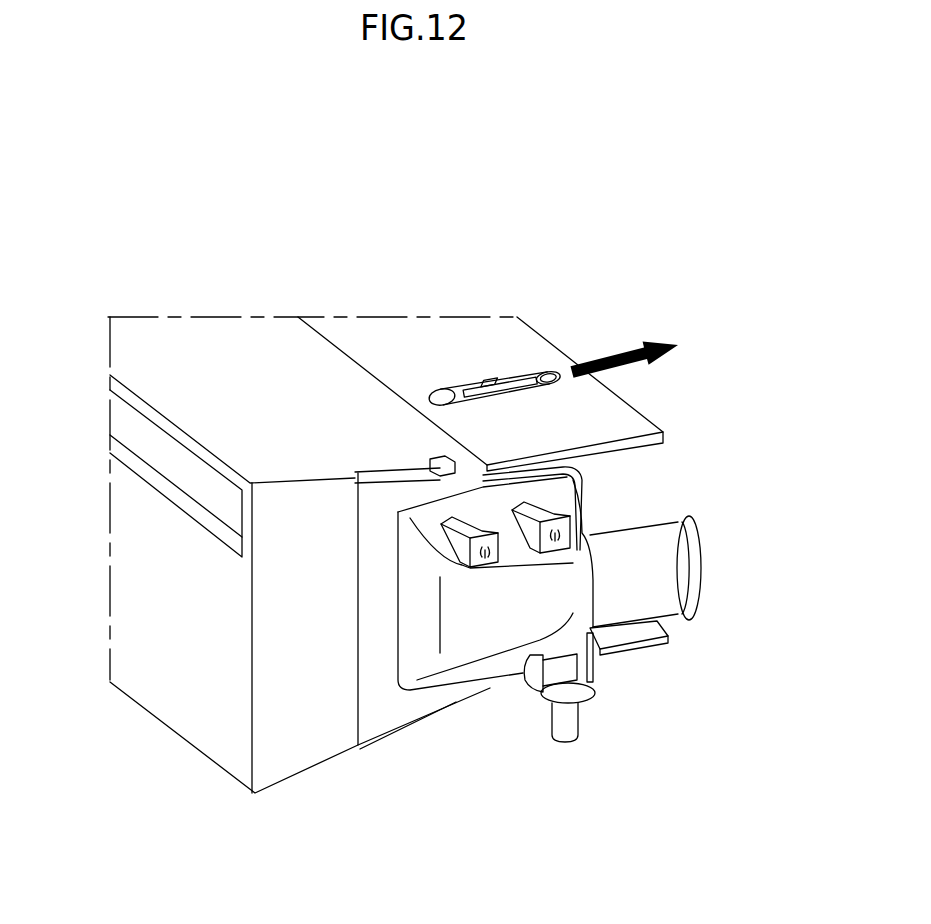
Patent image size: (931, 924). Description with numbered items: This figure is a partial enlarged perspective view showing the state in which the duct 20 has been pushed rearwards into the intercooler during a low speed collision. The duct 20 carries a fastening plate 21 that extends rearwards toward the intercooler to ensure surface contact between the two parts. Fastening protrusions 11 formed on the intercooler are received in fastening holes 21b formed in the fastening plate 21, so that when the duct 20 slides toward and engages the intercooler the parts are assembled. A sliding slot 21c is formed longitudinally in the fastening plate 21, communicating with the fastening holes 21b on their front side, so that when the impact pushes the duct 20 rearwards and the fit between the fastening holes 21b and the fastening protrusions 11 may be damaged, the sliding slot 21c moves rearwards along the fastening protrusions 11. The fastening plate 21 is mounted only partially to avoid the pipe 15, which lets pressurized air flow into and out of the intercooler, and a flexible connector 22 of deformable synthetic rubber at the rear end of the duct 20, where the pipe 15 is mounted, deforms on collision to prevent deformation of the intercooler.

The duct 20 is at (188, 672).
The fastening plate 21 is at (603, 408).
The fastening holes 21b is at (546, 372).
The sliding slot 21c is at (488, 387).
The fastening protrusions 11 is at (435, 391).
The flexible connector 22 is at (383, 708).
The pipe 15 is at (625, 598).